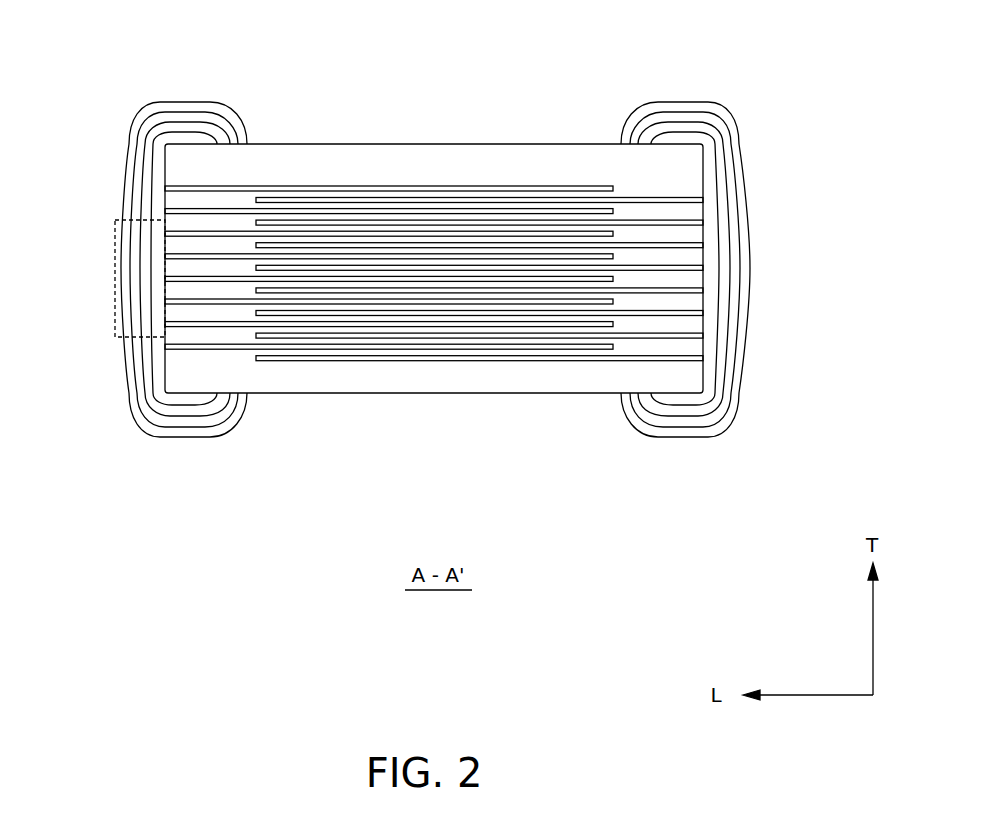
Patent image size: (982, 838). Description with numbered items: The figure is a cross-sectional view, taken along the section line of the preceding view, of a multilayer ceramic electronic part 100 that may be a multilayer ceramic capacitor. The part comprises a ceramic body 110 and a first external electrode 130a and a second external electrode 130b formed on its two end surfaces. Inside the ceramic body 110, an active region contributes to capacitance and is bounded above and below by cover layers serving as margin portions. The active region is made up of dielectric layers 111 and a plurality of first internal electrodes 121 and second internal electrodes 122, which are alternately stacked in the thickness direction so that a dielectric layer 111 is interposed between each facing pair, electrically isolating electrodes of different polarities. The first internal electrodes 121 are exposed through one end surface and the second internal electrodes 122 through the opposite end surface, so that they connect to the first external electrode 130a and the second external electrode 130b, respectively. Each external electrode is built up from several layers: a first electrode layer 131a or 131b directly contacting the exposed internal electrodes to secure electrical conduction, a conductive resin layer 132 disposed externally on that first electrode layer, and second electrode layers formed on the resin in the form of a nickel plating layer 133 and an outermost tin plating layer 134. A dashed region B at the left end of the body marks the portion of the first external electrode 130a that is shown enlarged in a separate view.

The multilayer ceramic electronic part 100 is at (148, 36).
The ceramic body 110 is at (430, 383).
The dielectric layer 111 is at (407, 195).
The first internal electrode 121 is at (348, 191).
The second internal electrode 122 is at (453, 203).
The first external electrode 130a is at (206, 347).
The second external electrode 130b is at (664, 347).
The first electrode layer 131a is at (249, 319).
The first electrode layer 131b is at (622, 320).
The conductive resin layer 132 is at (210, 408).
The nickel plating layer 133 is at (166, 430).
The tin plating layer 134 is at (140, 422).
The region B is at (115, 265).